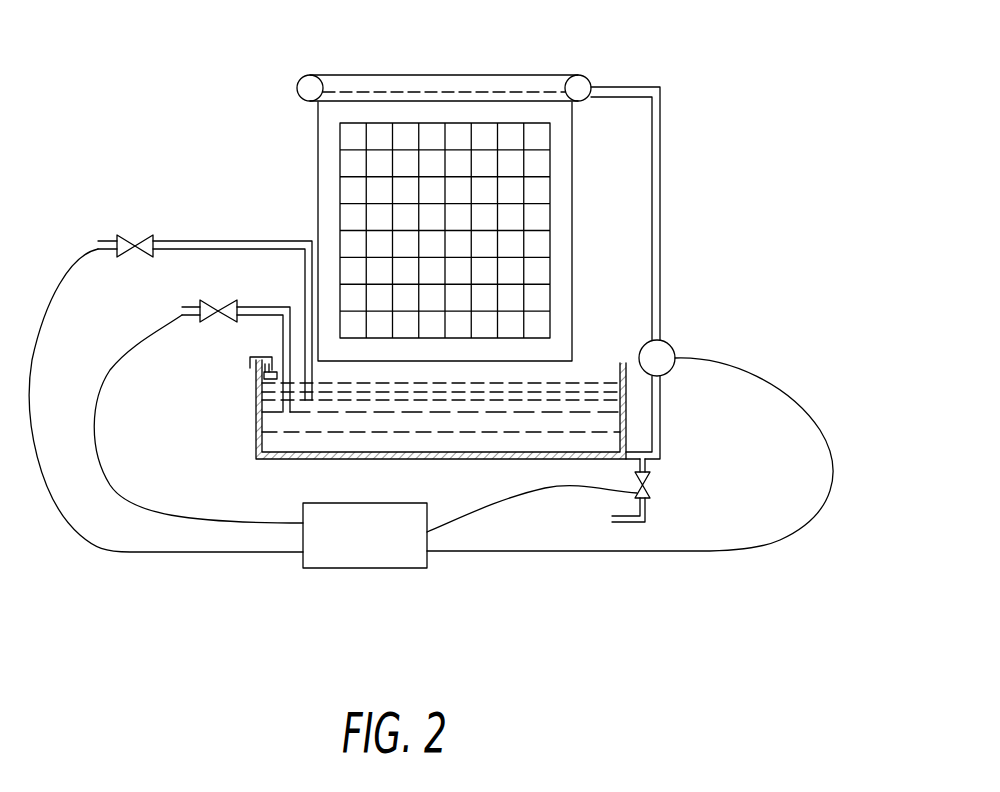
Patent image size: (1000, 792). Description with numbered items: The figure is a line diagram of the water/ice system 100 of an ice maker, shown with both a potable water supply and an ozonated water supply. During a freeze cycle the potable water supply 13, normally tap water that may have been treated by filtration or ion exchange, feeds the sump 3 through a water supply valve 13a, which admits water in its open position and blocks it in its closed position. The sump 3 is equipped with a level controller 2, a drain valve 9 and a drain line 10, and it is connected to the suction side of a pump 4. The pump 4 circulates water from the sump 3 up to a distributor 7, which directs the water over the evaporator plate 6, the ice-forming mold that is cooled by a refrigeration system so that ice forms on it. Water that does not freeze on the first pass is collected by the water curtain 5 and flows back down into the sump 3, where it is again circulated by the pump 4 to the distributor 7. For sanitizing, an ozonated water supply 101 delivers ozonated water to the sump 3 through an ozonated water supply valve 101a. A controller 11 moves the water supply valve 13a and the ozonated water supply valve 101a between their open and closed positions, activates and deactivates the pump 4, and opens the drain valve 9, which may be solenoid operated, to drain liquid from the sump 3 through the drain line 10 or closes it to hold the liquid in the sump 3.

The water/ice system 100 is at (233, 98).
The level controller 2 is at (262, 356).
The sump 3 is at (257, 423).
The pump 4 is at (672, 348).
The water curtain 5 is at (573, 243).
The evaporator plate 6 is at (551, 178).
The distributor 7 is at (584, 75).
The drain valve 9 is at (650, 483).
The drain line 10 is at (647, 514).
The controller 11 is at (379, 549).
The potable water supply 13 is at (170, 348).
The water supply valve 13a is at (138, 236).
The ozonated water supply 101 is at (198, 400).
The ozonated water supply valve 101a is at (218, 298).